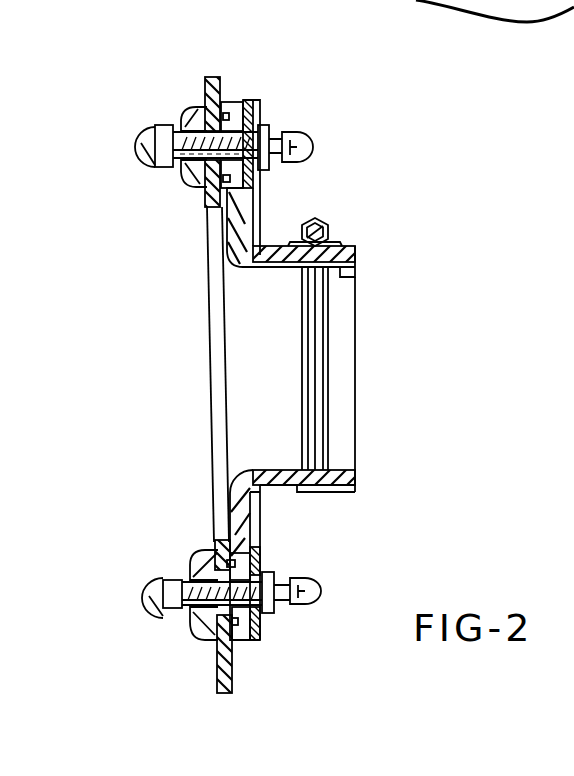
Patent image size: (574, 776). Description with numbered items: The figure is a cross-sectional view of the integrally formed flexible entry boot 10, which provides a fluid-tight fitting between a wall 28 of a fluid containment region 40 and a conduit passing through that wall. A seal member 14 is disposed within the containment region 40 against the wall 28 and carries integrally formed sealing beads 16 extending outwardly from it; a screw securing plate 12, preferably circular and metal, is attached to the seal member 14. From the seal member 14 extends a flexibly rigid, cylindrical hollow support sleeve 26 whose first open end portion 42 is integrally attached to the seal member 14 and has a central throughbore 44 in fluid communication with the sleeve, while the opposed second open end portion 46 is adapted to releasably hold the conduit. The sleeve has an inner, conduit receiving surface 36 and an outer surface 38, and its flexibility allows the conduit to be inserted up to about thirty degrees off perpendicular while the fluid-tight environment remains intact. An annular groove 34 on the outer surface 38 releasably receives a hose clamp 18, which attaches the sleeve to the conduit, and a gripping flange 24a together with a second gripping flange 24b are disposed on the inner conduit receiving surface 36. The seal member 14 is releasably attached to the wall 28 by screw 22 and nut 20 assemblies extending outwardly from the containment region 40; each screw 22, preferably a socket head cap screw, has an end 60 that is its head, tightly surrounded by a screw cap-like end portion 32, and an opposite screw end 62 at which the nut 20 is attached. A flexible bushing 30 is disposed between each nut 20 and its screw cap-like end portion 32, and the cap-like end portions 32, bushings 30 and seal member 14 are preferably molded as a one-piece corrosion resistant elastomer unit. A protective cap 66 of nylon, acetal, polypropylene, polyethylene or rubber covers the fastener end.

The flexible entry boot 10 is at (122, 319).
The screw securing plate 12 is at (256, 100).
The seal member 14 is at (250, 100).
The sealing beads 16 is at (228, 102).
The hose clamp 18 is at (333, 222).
The nut 20 is at (250, 613).
The screw 22 is at (313, 143).
The gripping flange 24a is at (323, 308).
The second gripping flange 24b is at (313, 345).
The hollow support sleeve 26 is at (270, 492).
The wall 28 is at (213, 78).
The flexible bushing 30 is at (183, 185).
The screw cap-like end portion 32 is at (135, 138).
The annular groove 34 is at (358, 490).
The inner conduit receiving surface 36 is at (263, 264).
The outer surface 38 is at (268, 242).
The fluid containment region 40 is at (382, 534).
The first open end portion 42 is at (238, 470).
The central throughbore 44 is at (212, 264).
The second open end portion 46 is at (356, 275).
The end of screw 60 is at (161, 126).
The screw end 62 is at (295, 128).
The protective cap 66 is at (310, 133).